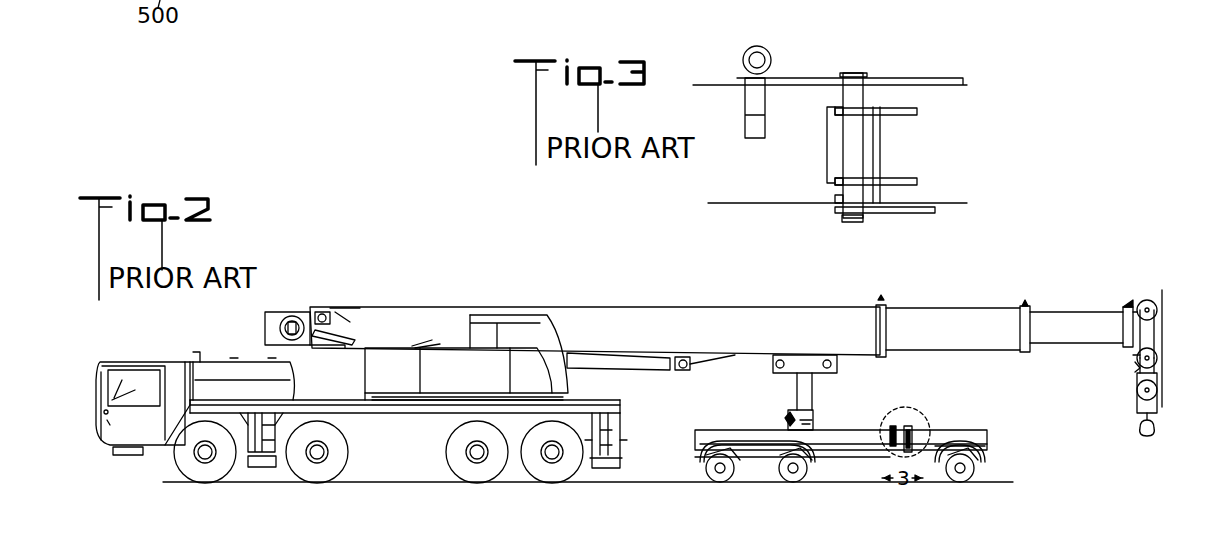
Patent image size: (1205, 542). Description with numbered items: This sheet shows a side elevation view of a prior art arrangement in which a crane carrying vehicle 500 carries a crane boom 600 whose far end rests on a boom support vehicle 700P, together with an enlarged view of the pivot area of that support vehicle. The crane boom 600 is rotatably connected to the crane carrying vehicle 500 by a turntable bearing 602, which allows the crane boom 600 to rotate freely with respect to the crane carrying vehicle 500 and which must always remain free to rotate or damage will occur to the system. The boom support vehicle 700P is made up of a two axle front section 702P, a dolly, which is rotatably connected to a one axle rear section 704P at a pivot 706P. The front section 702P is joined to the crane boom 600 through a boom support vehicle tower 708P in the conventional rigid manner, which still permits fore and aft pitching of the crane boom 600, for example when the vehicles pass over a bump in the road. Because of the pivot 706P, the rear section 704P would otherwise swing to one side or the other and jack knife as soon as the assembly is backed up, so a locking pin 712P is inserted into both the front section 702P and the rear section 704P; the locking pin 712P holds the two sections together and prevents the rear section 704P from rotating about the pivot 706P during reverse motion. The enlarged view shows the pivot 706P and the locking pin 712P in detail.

In FIG. 2, the crane carrying vehicle 500 is at (103, 357).
In FIG. 2, the turntable bearing 602 is at (458, 362).
In FIG. 2, the crane boom 600 is at (842, 333).
In FIG. 2, the boom support vehicle tower 708P is at (800, 368).
In FIG. 2, the boom support vehicle 700P is at (765, 425).
In FIG. 2, the front section 702P is at (866, 440).
In FIG. 2, the rear section 704P is at (970, 445).
In FIG. 2, the pivot 706P is at (910, 438).
In FIG. 3, the pivot 706P is at (853, 118).
In FIG. 2, the locking pin 712P is at (890, 433).
In FIG. 3, the locking pin 712P is at (757, 98).